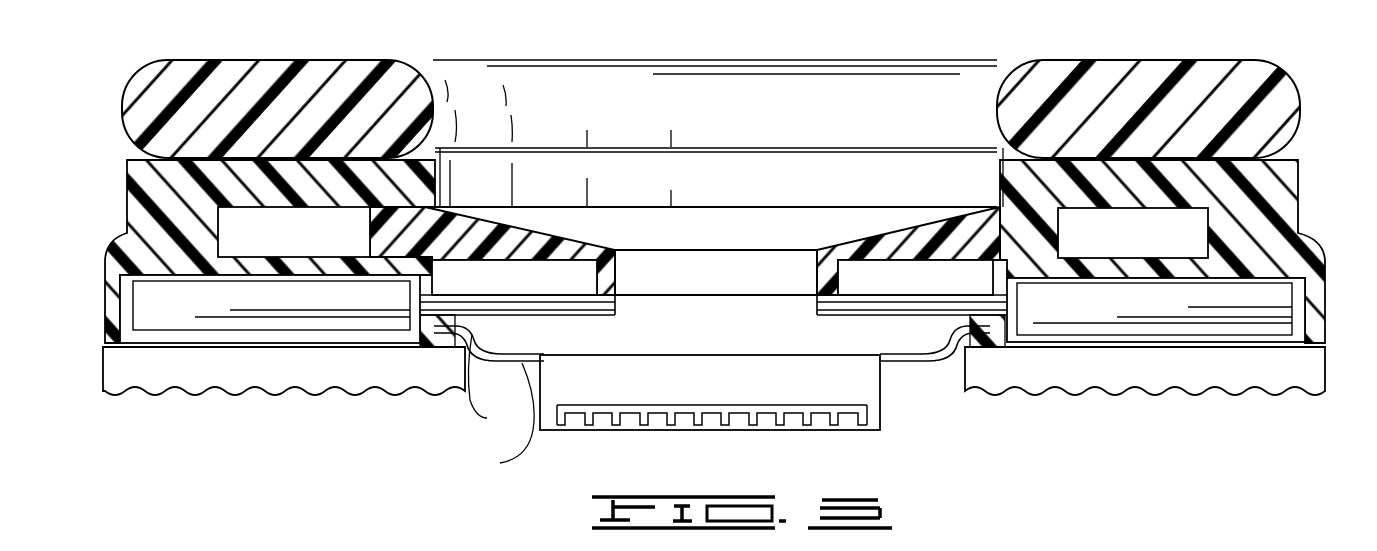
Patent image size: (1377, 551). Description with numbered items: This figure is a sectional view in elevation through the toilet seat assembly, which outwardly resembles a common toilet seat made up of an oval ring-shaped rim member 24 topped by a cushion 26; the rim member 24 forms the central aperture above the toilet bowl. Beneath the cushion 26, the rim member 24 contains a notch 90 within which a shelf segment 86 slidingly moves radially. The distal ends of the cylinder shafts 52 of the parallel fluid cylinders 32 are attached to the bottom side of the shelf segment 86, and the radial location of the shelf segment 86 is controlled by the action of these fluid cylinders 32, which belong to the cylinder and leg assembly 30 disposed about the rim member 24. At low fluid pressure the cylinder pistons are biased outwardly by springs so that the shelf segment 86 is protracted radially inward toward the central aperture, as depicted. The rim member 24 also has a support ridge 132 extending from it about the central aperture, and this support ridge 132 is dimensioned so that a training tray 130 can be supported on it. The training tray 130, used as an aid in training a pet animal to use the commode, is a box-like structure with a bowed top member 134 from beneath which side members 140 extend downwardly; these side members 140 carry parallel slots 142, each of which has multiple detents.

The rim member 24 is at (127, 208).
The cushion 26 is at (330, 58).
The cylinder and leg assembly 30 is at (228, 340).
The fluid cylinders 32 is at (148, 298).
The cylinder shafts 52 is at (490, 295).
The shelf segment 86 is at (527, 240).
The notch 90 is at (305, 244).
The training tray 130 is at (832, 388).
The support ridge 132 is at (976, 418).
The top member 134 is at (496, 419).
The side members 140 is at (683, 385).
The slots 142 is at (757, 385).